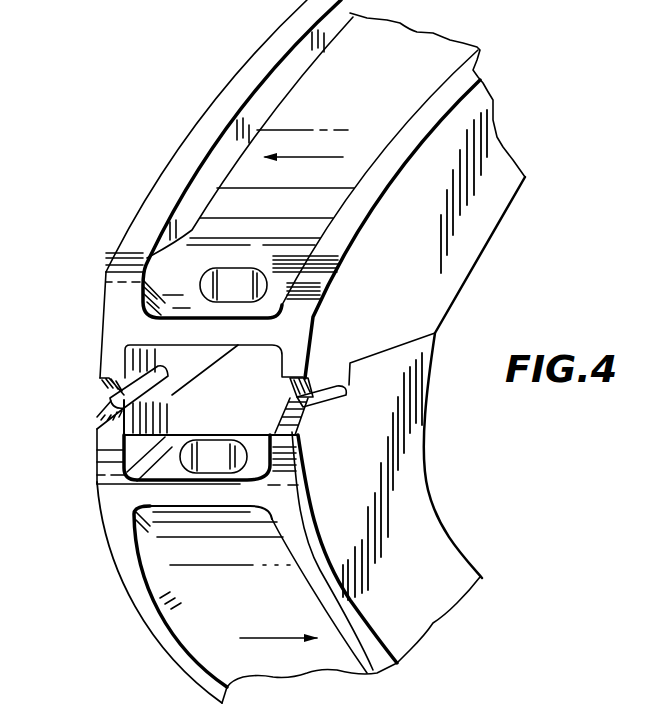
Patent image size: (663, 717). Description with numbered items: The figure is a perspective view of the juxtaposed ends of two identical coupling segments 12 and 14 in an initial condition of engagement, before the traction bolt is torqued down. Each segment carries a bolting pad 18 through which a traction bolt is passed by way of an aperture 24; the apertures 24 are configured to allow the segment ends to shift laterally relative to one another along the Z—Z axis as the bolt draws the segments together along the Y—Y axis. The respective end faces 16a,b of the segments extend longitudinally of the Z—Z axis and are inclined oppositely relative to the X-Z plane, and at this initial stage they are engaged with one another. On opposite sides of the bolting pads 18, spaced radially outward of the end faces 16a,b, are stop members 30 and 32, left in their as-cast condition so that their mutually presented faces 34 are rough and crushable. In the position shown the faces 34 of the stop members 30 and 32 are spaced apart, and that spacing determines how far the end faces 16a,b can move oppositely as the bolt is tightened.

The coupling segment 12 is at (477, 207).
The coupling segment 14 is at (443, 573).
The end faces 16a,b is at (192, 400).
The bolting pad 18 is at (257, 325).
The aperture 24 is at (233, 267).
The stop member 30 is at (102, 329).
The stop member 32 is at (98, 488).
The faces of the stop members 34 is at (166, 385).